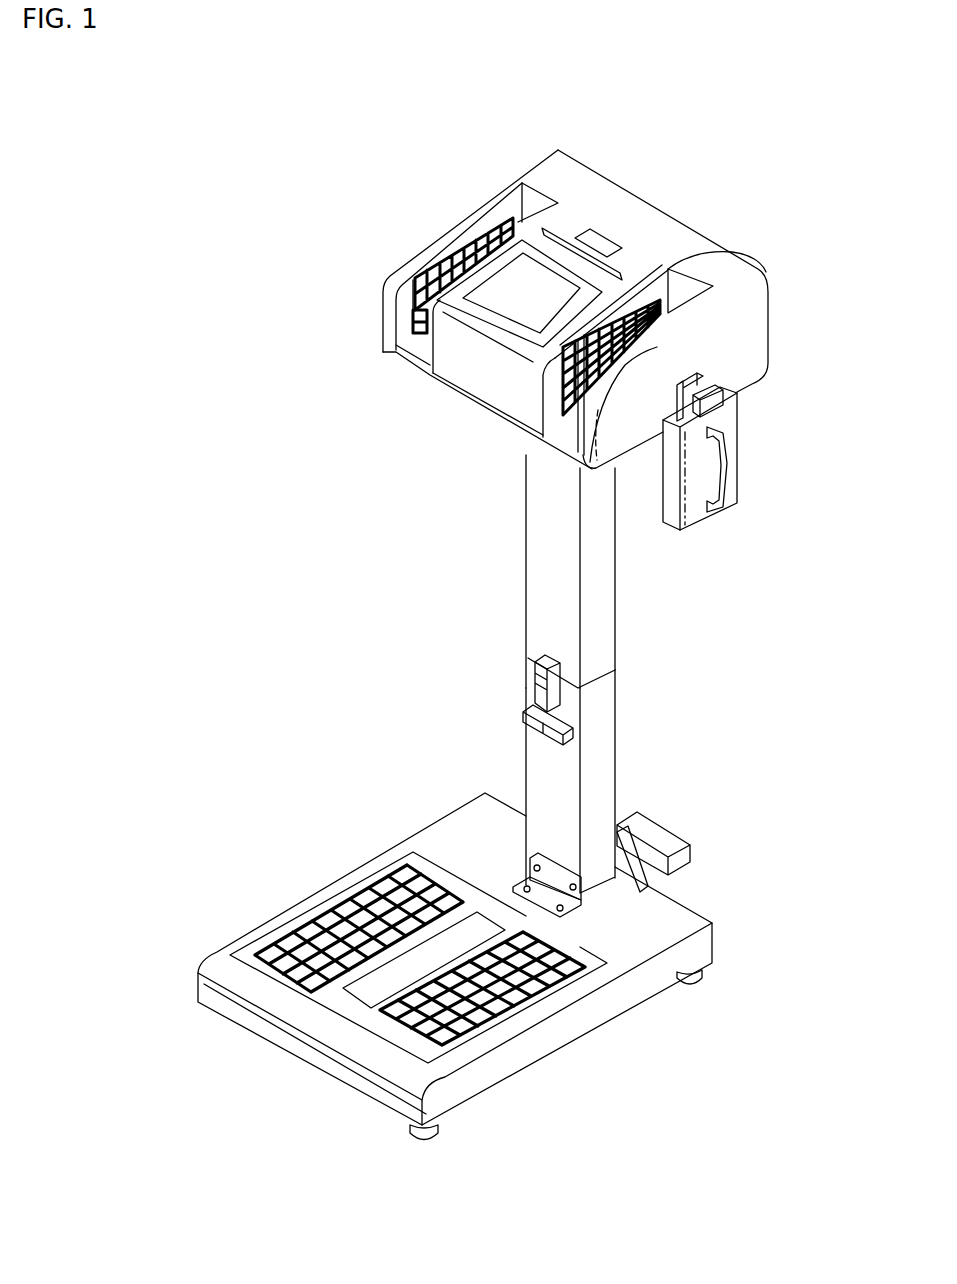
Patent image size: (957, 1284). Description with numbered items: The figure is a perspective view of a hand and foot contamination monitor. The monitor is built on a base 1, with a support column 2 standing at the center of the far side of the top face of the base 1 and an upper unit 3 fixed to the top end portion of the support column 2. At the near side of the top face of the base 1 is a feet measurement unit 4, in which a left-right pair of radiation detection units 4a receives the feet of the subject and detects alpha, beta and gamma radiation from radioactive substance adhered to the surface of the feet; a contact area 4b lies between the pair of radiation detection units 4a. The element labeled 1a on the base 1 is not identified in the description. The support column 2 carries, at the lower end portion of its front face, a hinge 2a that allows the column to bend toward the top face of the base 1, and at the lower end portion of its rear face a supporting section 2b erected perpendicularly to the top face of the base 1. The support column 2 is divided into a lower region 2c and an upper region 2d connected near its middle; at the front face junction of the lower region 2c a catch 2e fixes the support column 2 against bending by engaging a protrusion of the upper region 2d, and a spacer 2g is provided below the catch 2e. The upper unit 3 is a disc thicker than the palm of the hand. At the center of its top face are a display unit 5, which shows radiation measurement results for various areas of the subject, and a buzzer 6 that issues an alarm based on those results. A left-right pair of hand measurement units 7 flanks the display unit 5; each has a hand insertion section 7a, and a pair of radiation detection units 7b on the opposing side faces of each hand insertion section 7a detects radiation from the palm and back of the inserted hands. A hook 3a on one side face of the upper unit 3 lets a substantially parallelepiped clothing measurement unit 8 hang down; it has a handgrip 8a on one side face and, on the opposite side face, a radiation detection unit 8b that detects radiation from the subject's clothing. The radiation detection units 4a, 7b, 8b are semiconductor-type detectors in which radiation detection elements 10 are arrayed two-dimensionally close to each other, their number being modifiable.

The base 1 is at (455, 967).
The column mounting block 1a is at (683, 847).
The support column 2 is at (562, 703).
The hinge 2a is at (573, 897).
The supporting section 2b is at (650, 870).
The lower region 2c is at (607, 738).
The upper region 2d is at (607, 657).
The catch 2e is at (537, 688).
The spacer 2g is at (530, 723).
The upper unit 3 is at (650, 217).
The hook 3a is at (700, 363).
The feet measurement unit 4 is at (418, 967).
The radiation detection units 4a is at (525, 933).
The contact area 4b is at (396, 1017).
The display unit 5 is at (500, 317).
The buzzer 6 is at (600, 237).
The hand measurement units 7 is at (535, 185).
The hand insertion sections 7a is at (507, 210).
The radiation detection units 7b is at (427, 352).
The clothing measurement unit 8 is at (734, 496).
The handgrip 8a is at (733, 475).
The radiation detection unit 8b is at (663, 490).
The radiation detection elements 10 is at (417, 275).